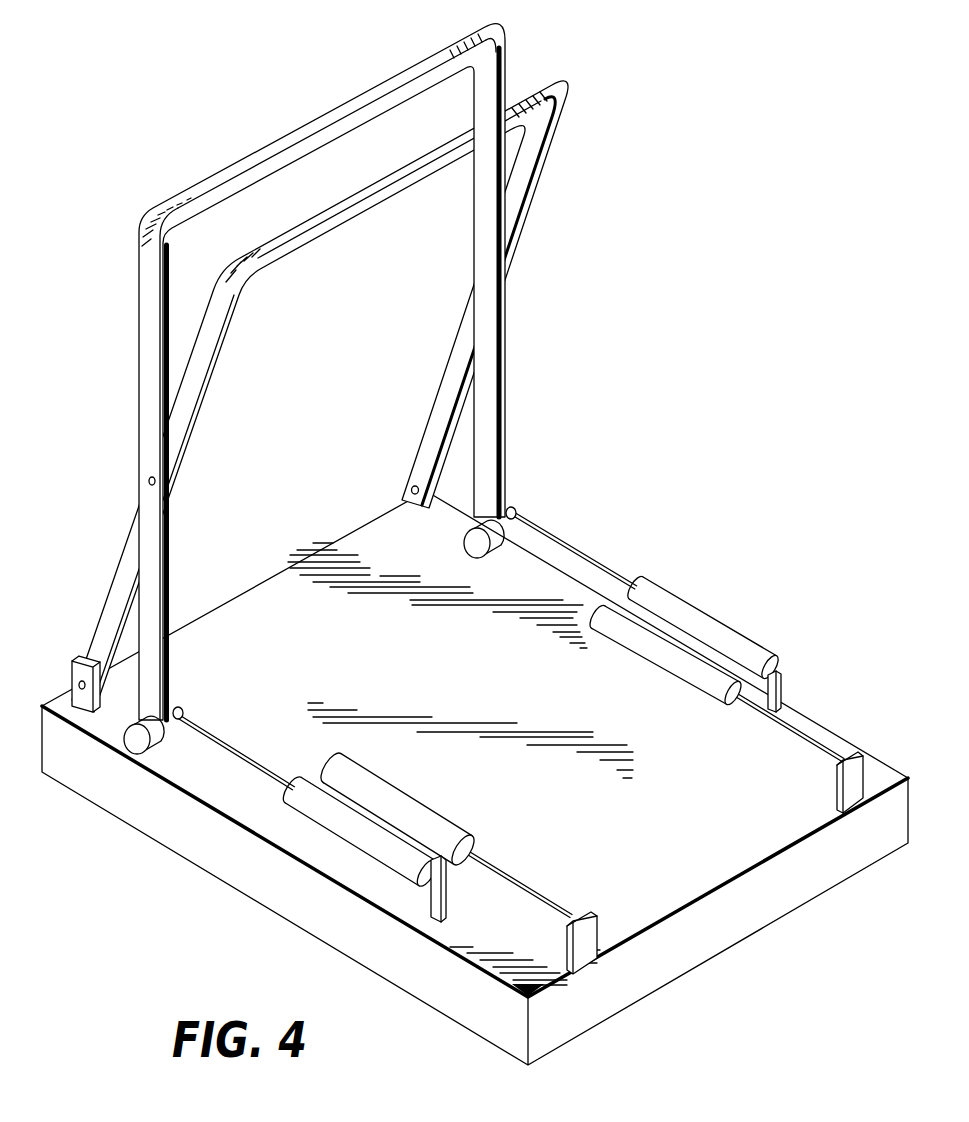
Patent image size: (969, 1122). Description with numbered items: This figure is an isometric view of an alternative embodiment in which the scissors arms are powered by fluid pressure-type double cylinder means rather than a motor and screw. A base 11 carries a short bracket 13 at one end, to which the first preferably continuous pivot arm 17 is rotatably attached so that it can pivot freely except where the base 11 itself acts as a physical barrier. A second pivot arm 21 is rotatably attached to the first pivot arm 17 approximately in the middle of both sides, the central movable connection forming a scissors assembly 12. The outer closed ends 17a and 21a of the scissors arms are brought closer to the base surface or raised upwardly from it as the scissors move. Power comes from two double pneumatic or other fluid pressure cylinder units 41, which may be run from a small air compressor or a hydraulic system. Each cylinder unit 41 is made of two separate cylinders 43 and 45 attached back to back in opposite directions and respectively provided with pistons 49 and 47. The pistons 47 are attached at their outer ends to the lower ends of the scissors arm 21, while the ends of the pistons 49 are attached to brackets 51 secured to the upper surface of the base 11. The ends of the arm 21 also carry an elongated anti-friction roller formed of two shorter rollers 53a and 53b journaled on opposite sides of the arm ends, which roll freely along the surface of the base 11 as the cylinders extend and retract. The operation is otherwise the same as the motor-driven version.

The base 11 is at (270, 888).
The scissors assembly 12 is at (112, 471).
The bracket 13 is at (76, 684).
The first pivot arm 17 is at (527, 188).
The outer closed end of first pivot arm 17a is at (352, 205).
The second pivot arm 21 is at (150, 340).
The outer closed end of second pivot arm 21a is at (289, 140).
The double fluid pressure cylinder unit 41 is at (438, 760).
The cylinder 43 is at (424, 812).
The cylinder 45 is at (300, 808).
The piston 47 is at (597, 534).
The piston 49 is at (524, 878).
The bracket 51 is at (598, 918).
The roller 53a is at (140, 748).
The roller 53b is at (175, 712).